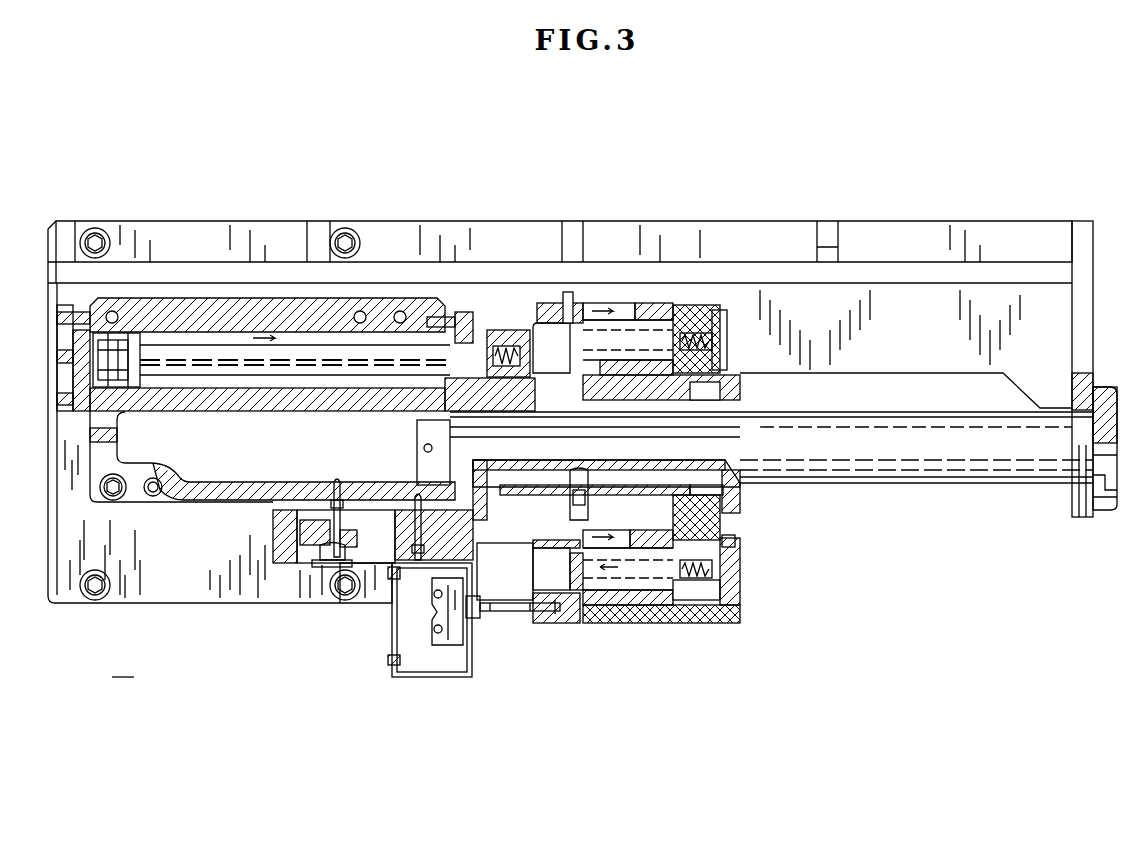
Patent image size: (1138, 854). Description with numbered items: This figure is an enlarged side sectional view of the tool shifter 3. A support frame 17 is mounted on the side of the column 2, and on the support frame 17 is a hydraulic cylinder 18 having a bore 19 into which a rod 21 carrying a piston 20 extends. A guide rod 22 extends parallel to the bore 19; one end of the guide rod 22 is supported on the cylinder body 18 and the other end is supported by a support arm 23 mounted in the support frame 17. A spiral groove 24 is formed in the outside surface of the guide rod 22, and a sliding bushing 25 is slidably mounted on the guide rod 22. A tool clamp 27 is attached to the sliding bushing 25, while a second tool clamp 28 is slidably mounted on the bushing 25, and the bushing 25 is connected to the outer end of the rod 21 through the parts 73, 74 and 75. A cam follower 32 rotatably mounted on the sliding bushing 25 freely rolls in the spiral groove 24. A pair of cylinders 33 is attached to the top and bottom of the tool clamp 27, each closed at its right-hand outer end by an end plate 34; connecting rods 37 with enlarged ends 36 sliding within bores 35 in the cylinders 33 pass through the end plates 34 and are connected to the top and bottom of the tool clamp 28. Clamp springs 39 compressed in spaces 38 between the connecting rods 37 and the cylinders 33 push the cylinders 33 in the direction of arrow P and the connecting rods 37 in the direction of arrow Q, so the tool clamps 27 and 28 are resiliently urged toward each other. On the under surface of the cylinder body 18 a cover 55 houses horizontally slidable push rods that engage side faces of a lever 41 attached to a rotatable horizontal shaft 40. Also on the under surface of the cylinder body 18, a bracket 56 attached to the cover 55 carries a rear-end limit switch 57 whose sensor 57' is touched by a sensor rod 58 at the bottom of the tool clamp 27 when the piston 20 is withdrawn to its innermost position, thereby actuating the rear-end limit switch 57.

The column 2 is at (220, 453).
The tool shifter 3 is at (805, 220).
The support frame 17 is at (230, 577).
The hydraulic cylinder 18 is at (200, 495).
The bore 19 is at (177, 338).
The piston 20 is at (122, 345).
The rod 21 is at (223, 357).
The guide rod 22 is at (845, 460).
The support arm 23 is at (1082, 323).
The spiral groove 24 is at (740, 490).
The sliding bushing 25 is at (612, 412).
The tool clamp 27 is at (584, 310).
The tool clamp 28 is at (700, 310).
The cam follower 32 is at (728, 570).
The cylinder 33 is at (625, 305).
The end plate 34 is at (683, 317).
The bore 35 is at (545, 330).
The enlarged end 36 is at (560, 322).
The connecting rod 37 is at (668, 325).
The space 38 is at (605, 307).
The clamp spring 39 is at (675, 330).
The horizontal shaft 40 is at (338, 557).
The lever 41 is at (313, 547).
The cover 55 is at (320, 555).
The bracket 56 is at (420, 678).
The rear-end limit switch 57 is at (446, 661).
The sensor 57' is at (513, 670).
The sensor rod 58 is at (503, 600).
The part 73 is at (507, 357).
The part 74 is at (485, 347).
The part 75 is at (527, 350).